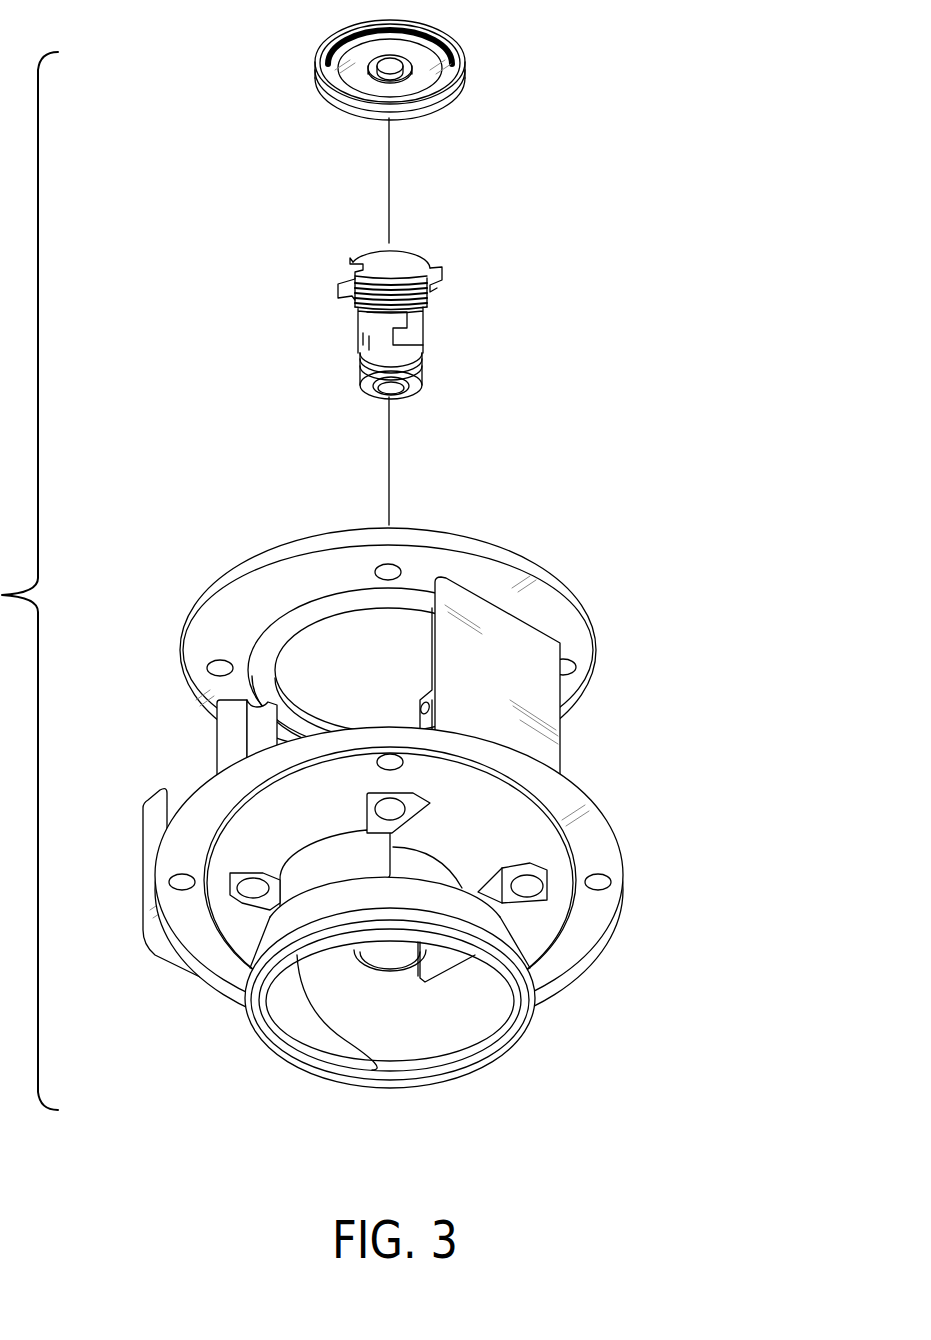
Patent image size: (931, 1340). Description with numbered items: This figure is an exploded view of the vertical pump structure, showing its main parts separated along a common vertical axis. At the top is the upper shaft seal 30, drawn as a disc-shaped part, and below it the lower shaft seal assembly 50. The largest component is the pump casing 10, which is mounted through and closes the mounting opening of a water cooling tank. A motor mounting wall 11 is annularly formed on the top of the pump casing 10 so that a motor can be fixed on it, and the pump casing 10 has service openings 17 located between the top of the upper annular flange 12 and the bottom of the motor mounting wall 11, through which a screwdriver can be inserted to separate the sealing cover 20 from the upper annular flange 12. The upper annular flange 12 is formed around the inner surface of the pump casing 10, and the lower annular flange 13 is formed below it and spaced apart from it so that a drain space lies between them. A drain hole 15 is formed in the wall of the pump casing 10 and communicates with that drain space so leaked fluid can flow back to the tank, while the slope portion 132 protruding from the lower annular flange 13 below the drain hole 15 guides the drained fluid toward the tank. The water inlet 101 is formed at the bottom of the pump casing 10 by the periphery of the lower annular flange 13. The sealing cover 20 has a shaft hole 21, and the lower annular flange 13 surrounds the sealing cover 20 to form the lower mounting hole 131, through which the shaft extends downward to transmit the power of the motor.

The pump casing 10 is at (392, 782).
The motor mounting wall 11 is at (548, 603).
The upper annular flange 12 is at (603, 847).
The lower annular flange 13 is at (383, 954).
The drain hole 15 is at (474, 847).
The service opening 17 is at (268, 610).
The sealing cover 20 is at (437, 72).
The shaft hole 21 is at (398, 78).
The upper shaft seal 30 is at (368, 73).
The lower shaft seal assembly 50 is at (443, 332).
The water inlet 101 is at (473, 1017).
The lower mounting hole 131 is at (387, 953).
The slope portion 132 is at (487, 925).